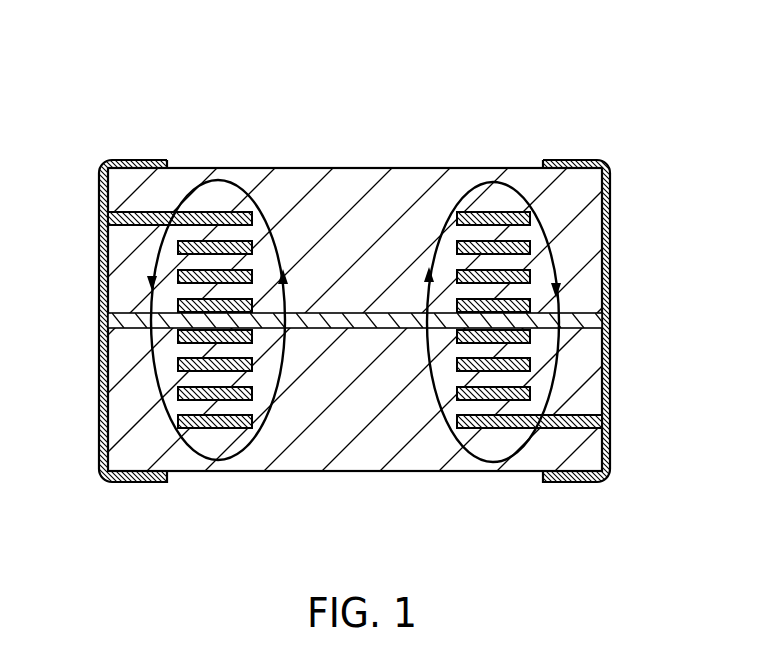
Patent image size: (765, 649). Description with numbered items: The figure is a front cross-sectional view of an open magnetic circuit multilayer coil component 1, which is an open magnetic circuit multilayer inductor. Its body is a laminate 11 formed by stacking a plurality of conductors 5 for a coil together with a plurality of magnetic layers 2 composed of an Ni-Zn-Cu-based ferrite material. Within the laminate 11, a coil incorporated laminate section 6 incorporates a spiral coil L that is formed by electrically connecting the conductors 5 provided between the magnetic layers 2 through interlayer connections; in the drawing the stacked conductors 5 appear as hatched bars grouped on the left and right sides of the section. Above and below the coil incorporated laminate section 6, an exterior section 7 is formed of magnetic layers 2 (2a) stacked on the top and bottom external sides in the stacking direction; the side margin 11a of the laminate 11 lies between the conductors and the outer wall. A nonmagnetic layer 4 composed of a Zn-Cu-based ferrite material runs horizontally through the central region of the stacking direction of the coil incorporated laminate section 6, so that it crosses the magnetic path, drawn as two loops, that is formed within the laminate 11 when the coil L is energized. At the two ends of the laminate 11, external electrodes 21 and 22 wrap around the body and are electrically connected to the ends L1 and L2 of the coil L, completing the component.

The open magnetic circuit multilayer coil component 1 is at (382, 288).
The laminate 11 is at (357, 168).
The side margin portion 11a is at (560, 250).
The magnetic layers 2 is at (420, 357).
The magnetic layers of the exterior section 2a is at (605, 167).
The external electrode 21 is at (122, 482).
The external electrode 22 is at (611, 197).
The nonmagnetic layer 4 is at (376, 328).
The conductors for a coil 5 is at (530, 336).
The coil incorporated laminate section 6 is at (67, 218).
The exterior section 7 is at (67, 168).
The spiral coil L is at (449, 213).
The end of the coil L1 is at (120, 210).
The end of the coil L2 is at (610, 418).